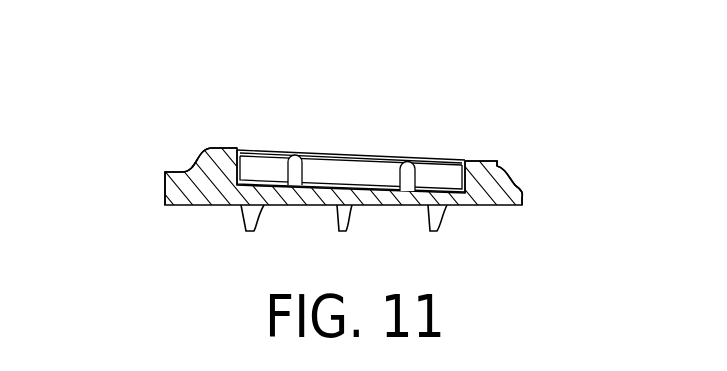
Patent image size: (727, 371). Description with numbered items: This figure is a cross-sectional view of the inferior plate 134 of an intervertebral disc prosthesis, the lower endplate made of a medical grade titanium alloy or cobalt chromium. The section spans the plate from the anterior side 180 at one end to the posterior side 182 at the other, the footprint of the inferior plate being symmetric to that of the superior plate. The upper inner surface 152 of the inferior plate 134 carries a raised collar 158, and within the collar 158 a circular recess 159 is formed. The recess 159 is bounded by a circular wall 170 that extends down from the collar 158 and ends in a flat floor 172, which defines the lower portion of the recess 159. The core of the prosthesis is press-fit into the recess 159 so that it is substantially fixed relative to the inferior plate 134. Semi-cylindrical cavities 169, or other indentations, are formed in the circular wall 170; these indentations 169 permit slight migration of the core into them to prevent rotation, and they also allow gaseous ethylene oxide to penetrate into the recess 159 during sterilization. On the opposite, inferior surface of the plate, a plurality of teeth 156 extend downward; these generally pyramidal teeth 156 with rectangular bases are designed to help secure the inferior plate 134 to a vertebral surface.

The inferior plate 134 is at (340, 147).
The upper inner surface 152 is at (484, 156).
The teeth 156 is at (448, 215).
The collar 158 is at (225, 147).
The recess 159 is at (267, 166).
The semi-cylindrical cavities 169 is at (298, 155).
The circular wall 170 is at (358, 116).
The flat floor 172 is at (433, 166).
The anterior side 180 is at (163, 190).
The posterior side 182 is at (519, 190).